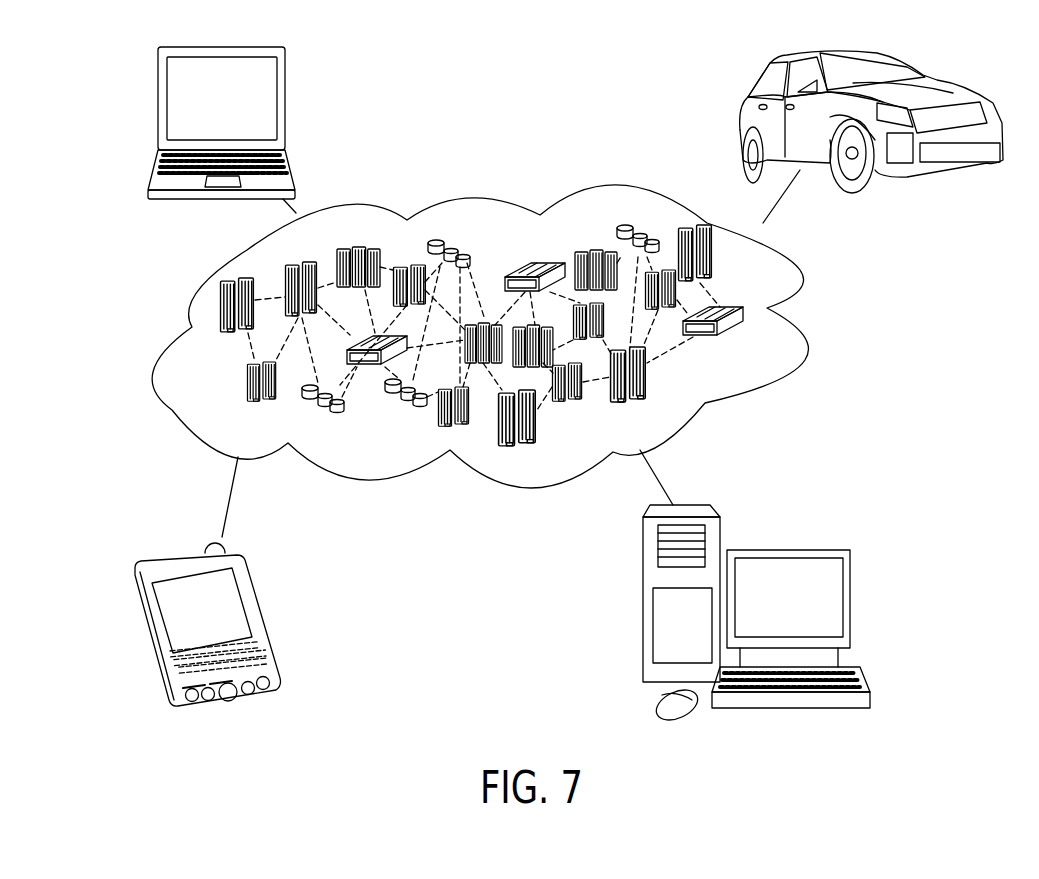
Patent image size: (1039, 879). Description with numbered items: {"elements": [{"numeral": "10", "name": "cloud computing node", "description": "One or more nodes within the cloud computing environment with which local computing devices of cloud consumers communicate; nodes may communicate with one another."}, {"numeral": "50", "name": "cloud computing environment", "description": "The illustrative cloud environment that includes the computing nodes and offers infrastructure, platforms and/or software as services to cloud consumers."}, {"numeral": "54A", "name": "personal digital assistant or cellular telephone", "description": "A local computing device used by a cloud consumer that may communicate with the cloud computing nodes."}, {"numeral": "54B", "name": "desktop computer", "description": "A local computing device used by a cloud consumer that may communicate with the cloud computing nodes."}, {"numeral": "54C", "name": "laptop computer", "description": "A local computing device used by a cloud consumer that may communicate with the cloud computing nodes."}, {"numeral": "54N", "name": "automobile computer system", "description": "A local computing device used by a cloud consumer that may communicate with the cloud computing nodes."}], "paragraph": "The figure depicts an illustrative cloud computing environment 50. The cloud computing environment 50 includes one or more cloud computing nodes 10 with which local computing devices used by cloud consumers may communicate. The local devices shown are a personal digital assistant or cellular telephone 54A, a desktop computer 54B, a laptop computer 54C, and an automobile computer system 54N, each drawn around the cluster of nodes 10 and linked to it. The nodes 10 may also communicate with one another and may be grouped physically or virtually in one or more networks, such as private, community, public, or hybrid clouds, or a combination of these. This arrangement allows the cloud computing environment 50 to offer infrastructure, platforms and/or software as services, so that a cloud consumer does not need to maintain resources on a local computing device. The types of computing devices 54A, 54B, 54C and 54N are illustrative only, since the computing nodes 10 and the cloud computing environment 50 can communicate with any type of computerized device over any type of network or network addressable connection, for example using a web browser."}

The system / network 10 is at (757, 359).
The cloud computing environment 50 is at (807, 262).
The personal digital assistant / cellular telephone 54A is at (253, 597).
The desktop computer 54B is at (852, 597).
The laptop computer 54C is at (285, 100).
The automobile computer system 54N is at (918, 70).